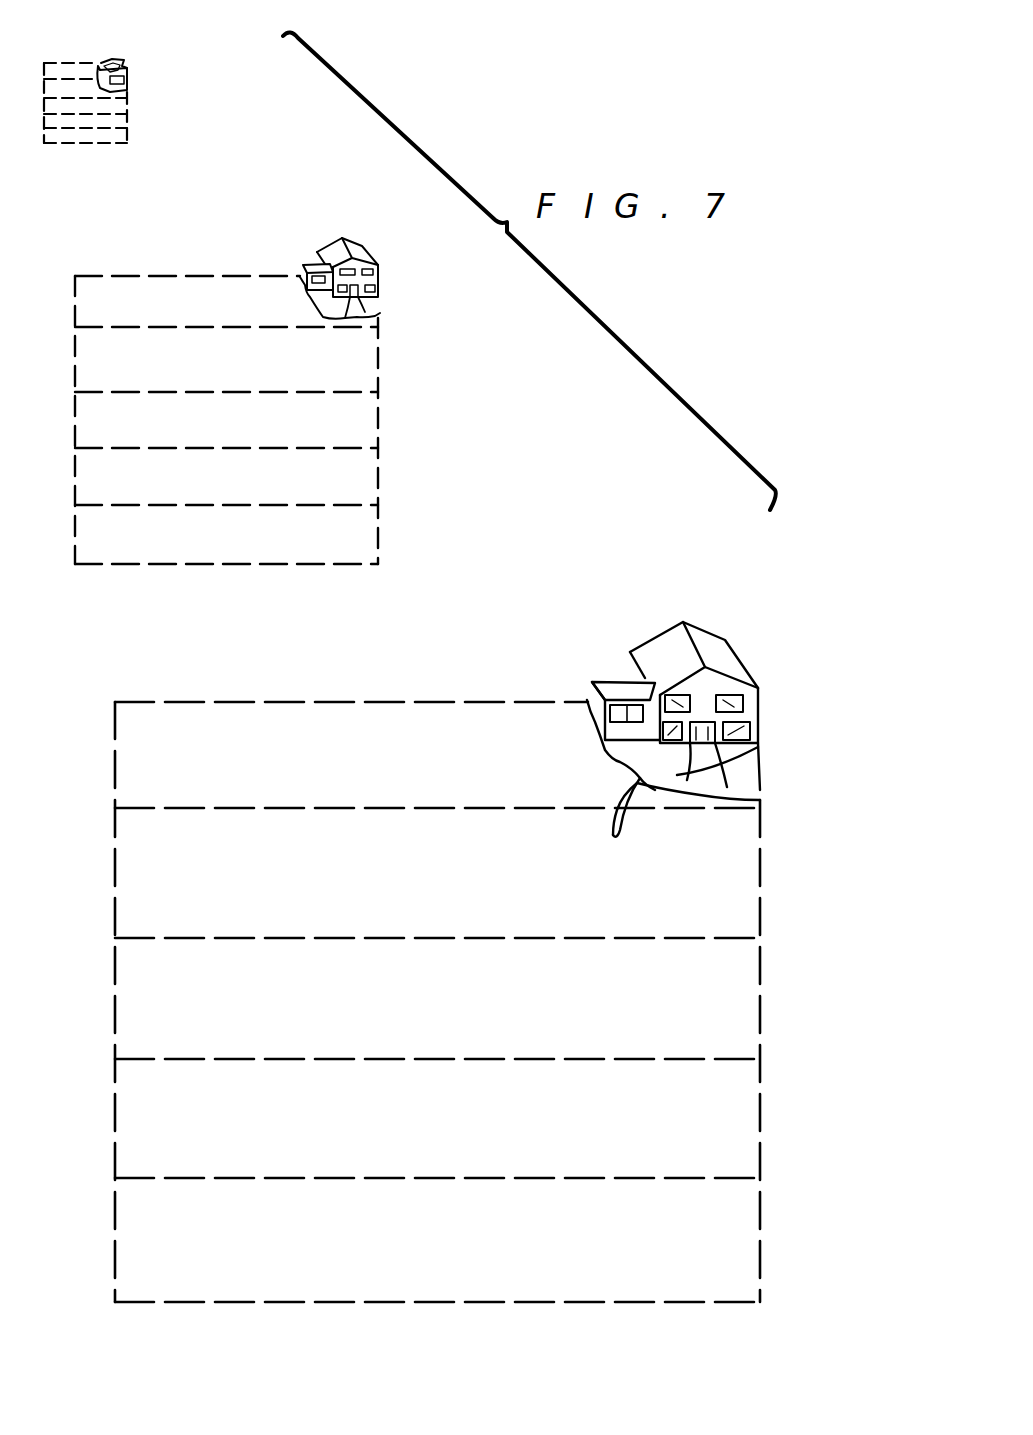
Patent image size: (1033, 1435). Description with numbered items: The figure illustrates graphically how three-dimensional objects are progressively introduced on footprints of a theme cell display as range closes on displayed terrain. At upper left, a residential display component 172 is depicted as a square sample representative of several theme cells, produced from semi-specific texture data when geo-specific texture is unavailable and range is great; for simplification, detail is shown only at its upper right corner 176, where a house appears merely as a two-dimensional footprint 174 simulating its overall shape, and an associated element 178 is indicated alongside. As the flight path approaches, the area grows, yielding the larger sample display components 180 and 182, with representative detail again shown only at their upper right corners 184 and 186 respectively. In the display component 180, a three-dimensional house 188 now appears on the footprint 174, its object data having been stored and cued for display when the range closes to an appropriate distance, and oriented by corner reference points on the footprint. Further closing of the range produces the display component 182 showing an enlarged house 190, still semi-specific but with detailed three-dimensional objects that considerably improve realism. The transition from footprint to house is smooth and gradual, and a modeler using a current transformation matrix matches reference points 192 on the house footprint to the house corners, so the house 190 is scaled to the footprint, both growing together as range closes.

The display component 172 is at (127, 120).
The footprint 174 is at (124, 58).
The upper right corner 176 is at (128, 78).
The stack of floors 178 is at (55, 112).
The display component 180 is at (379, 487).
The upper right corner 184 is at (377, 318).
The house 188 is at (378, 295).
The display component 182 is at (413, 702).
The upper right corner 186 is at (587, 705).
The enlarged house 190 is at (657, 637).
The reference points 192 is at (686, 807).